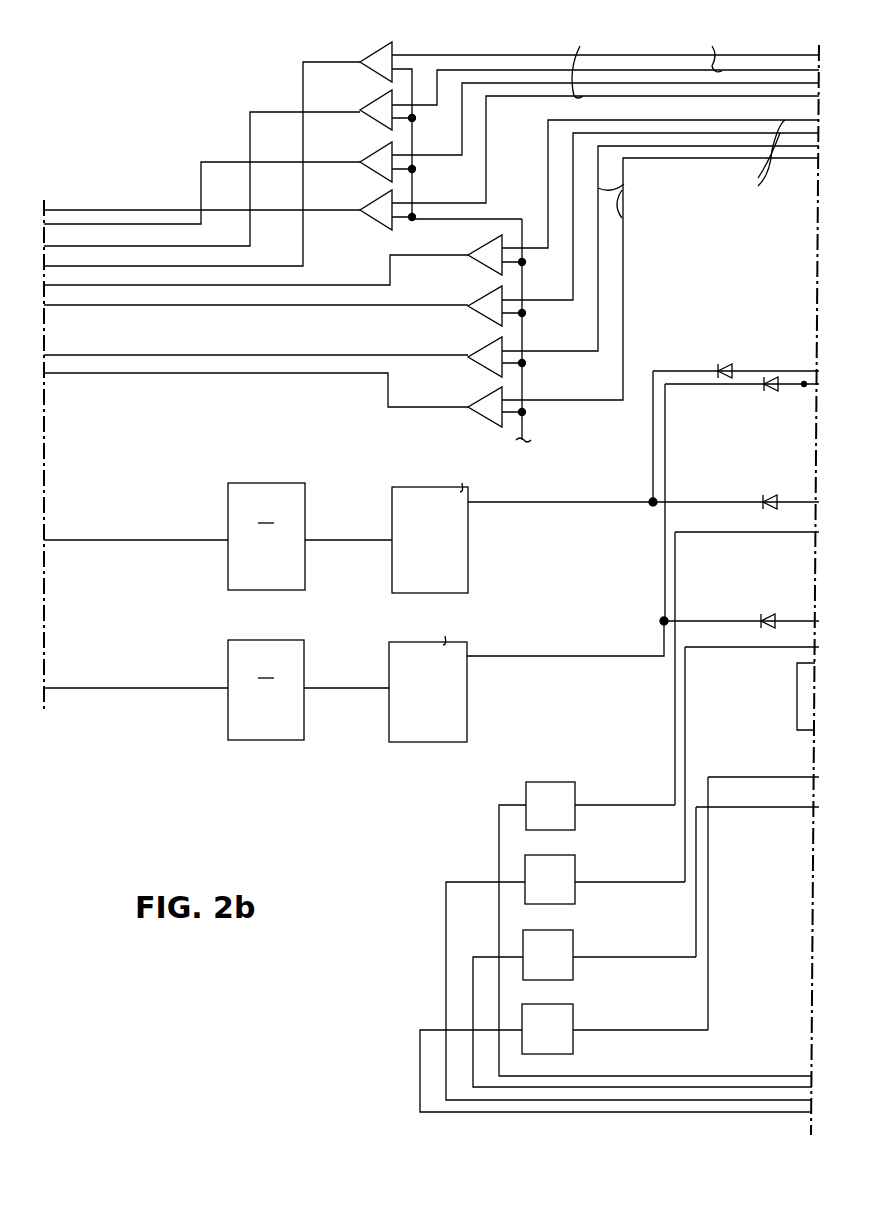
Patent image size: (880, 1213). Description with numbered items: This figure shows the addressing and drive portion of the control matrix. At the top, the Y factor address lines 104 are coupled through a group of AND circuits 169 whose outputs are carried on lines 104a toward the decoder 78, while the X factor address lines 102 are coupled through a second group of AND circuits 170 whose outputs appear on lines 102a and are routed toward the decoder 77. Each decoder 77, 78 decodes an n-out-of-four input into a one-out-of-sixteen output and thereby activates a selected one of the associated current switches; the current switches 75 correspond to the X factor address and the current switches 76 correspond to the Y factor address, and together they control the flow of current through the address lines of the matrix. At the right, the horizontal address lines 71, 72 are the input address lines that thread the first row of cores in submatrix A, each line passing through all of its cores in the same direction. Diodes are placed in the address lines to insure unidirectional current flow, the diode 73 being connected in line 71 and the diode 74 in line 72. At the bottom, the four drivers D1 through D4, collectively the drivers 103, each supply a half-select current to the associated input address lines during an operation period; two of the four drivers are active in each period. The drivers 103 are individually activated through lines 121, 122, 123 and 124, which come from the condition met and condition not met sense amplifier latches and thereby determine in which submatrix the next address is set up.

The Y factor address lines 104 is at (505, 98).
The lines 104a is at (132, 266).
The AND circuits 169 is at (372, 97).
The X factor address lines 102 is at (662, 165).
The lines 102a is at (222, 290).
The AND circuits 170 is at (478, 293).
The diode 73 is at (727, 366).
The diode 74 is at (770, 392).
The address line 71 is at (768, 372).
The address line 72 is at (804, 386).
The current switches 75 is at (465, 551).
The current switches 76 is at (463, 673).
The decoder 77 is at (300, 576).
The decoder 78 is at (297, 660).
The drivers 103 is at (575, 822).
The line 121 is at (575, 1075).
The line 122 is at (580, 1104).
The line 123 is at (690, 1086).
The line 124 is at (655, 1112).